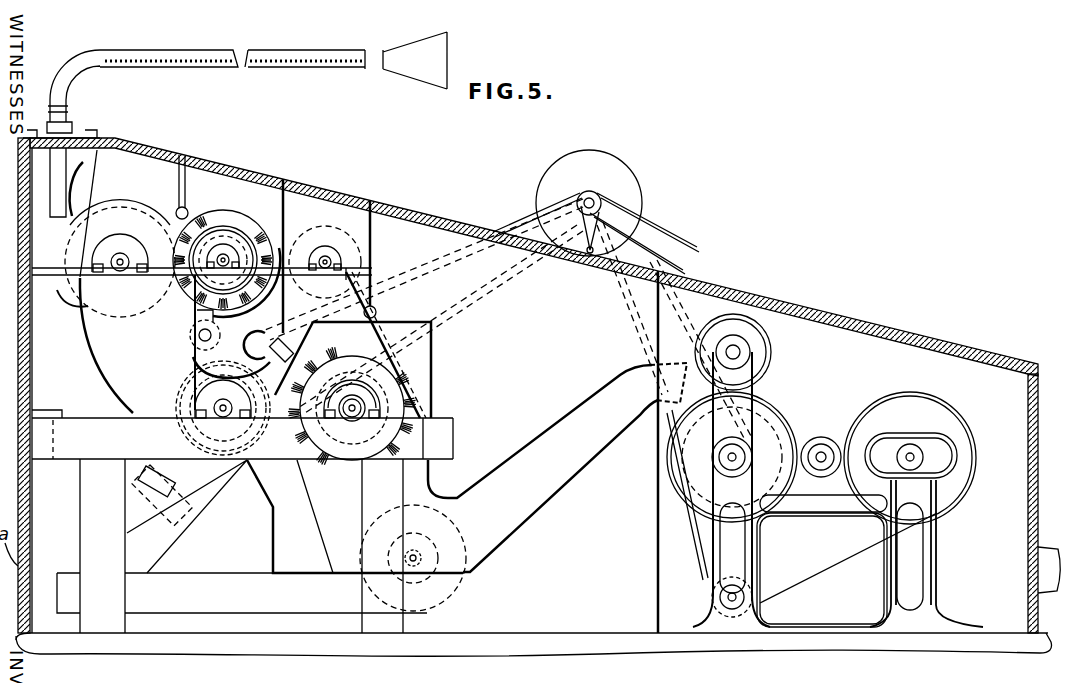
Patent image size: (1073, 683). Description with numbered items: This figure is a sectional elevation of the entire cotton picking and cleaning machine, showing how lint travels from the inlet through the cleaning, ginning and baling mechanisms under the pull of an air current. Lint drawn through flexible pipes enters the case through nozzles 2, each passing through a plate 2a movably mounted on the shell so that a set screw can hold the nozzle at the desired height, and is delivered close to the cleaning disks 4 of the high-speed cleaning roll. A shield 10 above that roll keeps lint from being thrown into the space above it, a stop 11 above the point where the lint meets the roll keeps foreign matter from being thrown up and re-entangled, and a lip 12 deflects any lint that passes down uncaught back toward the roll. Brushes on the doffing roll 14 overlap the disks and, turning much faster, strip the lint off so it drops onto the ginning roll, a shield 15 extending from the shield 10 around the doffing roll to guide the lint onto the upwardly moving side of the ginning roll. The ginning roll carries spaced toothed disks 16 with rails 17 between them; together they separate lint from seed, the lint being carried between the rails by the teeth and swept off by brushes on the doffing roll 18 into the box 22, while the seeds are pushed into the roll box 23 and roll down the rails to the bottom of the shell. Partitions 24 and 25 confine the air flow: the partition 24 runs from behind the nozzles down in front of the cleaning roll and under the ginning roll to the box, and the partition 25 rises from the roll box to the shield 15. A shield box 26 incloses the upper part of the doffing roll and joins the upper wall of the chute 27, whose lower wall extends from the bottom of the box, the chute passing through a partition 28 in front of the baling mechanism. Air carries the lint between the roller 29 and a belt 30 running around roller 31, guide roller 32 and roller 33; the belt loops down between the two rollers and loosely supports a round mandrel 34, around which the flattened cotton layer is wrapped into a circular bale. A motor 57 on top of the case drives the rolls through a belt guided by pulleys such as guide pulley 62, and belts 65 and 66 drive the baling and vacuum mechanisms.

The plate 2a is at (74, 138).
The nozzle 2 is at (50, 194).
The cleaning disk 4 is at (68, 240).
The shield 10 is at (151, 202).
The stop 11 is at (86, 182).
The lip 12 is at (66, 309).
The doffing roll 14 is at (214, 207).
The shield 15 is at (253, 215).
The toothed disk 16 is at (175, 392).
The rail 17 is at (198, 360).
The doffing roll 18 is at (405, 383).
The box 22 is at (356, 535).
The roll box 23 is at (259, 332).
The partition 24 is at (94, 349).
The partition 25 is at (284, 303).
The shield box 26 is at (432, 353).
The chute 27 is at (576, 425).
The partition 28 is at (655, 476).
The roller 29 is at (764, 350).
The belt 30 is at (786, 414).
The roller 31 is at (696, 466).
The guide roller 32 is at (715, 600).
The roller 33 is at (955, 486).
The mandrel 34 is at (826, 428).
The motor 57 is at (630, 186).
The guide pulley 62 is at (323, 225).
The belt 65 is at (588, 252).
The belt 66 is at (686, 243).